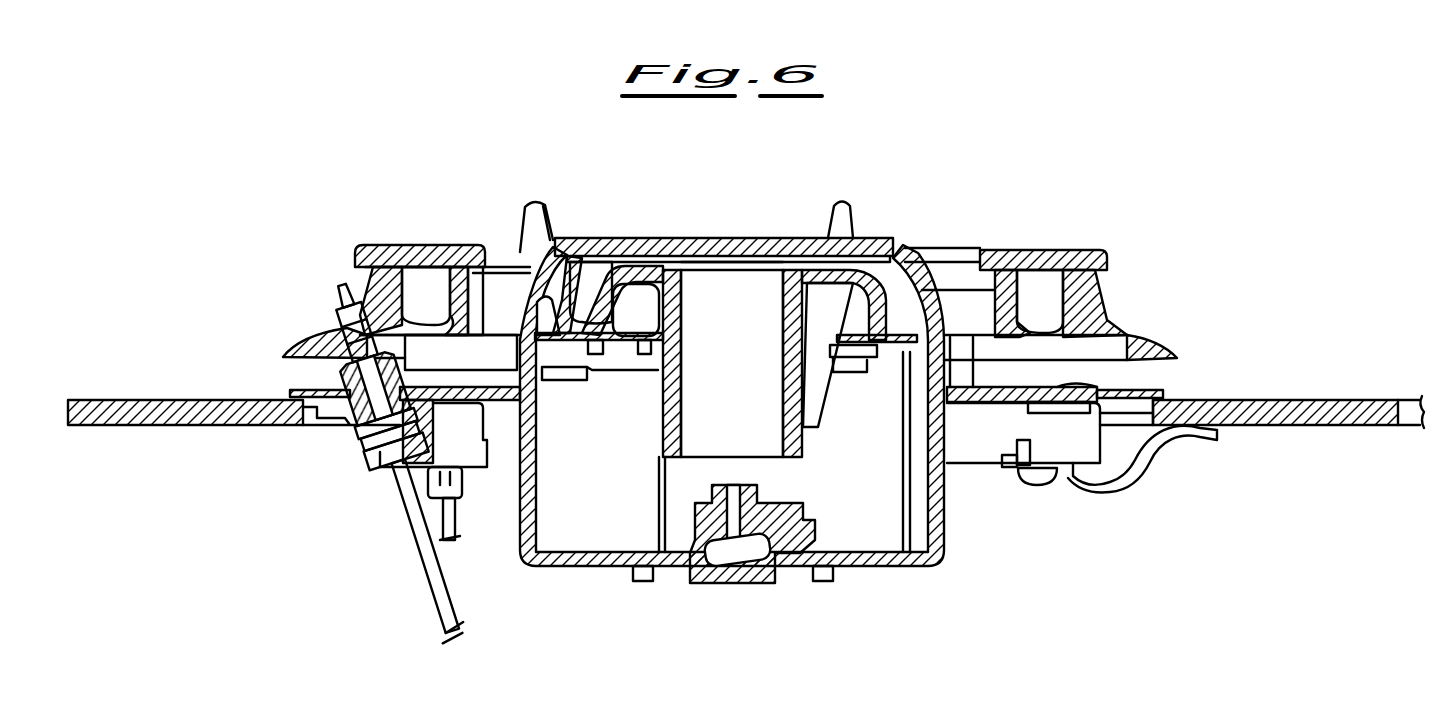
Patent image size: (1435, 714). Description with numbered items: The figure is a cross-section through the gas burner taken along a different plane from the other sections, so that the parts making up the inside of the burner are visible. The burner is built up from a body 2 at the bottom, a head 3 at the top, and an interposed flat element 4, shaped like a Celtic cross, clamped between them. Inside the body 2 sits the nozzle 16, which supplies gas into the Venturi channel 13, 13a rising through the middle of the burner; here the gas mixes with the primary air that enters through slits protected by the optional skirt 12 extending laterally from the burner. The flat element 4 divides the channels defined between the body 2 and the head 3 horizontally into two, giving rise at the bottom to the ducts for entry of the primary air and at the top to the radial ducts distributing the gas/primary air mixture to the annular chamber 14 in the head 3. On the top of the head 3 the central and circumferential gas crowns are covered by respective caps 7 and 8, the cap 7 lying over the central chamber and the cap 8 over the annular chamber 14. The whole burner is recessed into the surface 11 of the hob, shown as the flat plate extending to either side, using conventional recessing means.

The body 2 is at (888, 563).
The head 3 is at (1090, 302).
The interposed flat element 4 is at (637, 246).
The cap 7 is at (795, 240).
The cap 8 is at (1007, 248).
The surface 11 is at (183, 398).
The skirt 12 is at (1178, 352).
The Venturi channel 13 is at (746, 373).
The Venturi channel 13a is at (702, 268).
The annular chamber 14 is at (1052, 282).
The nozzle 16 is at (735, 540).